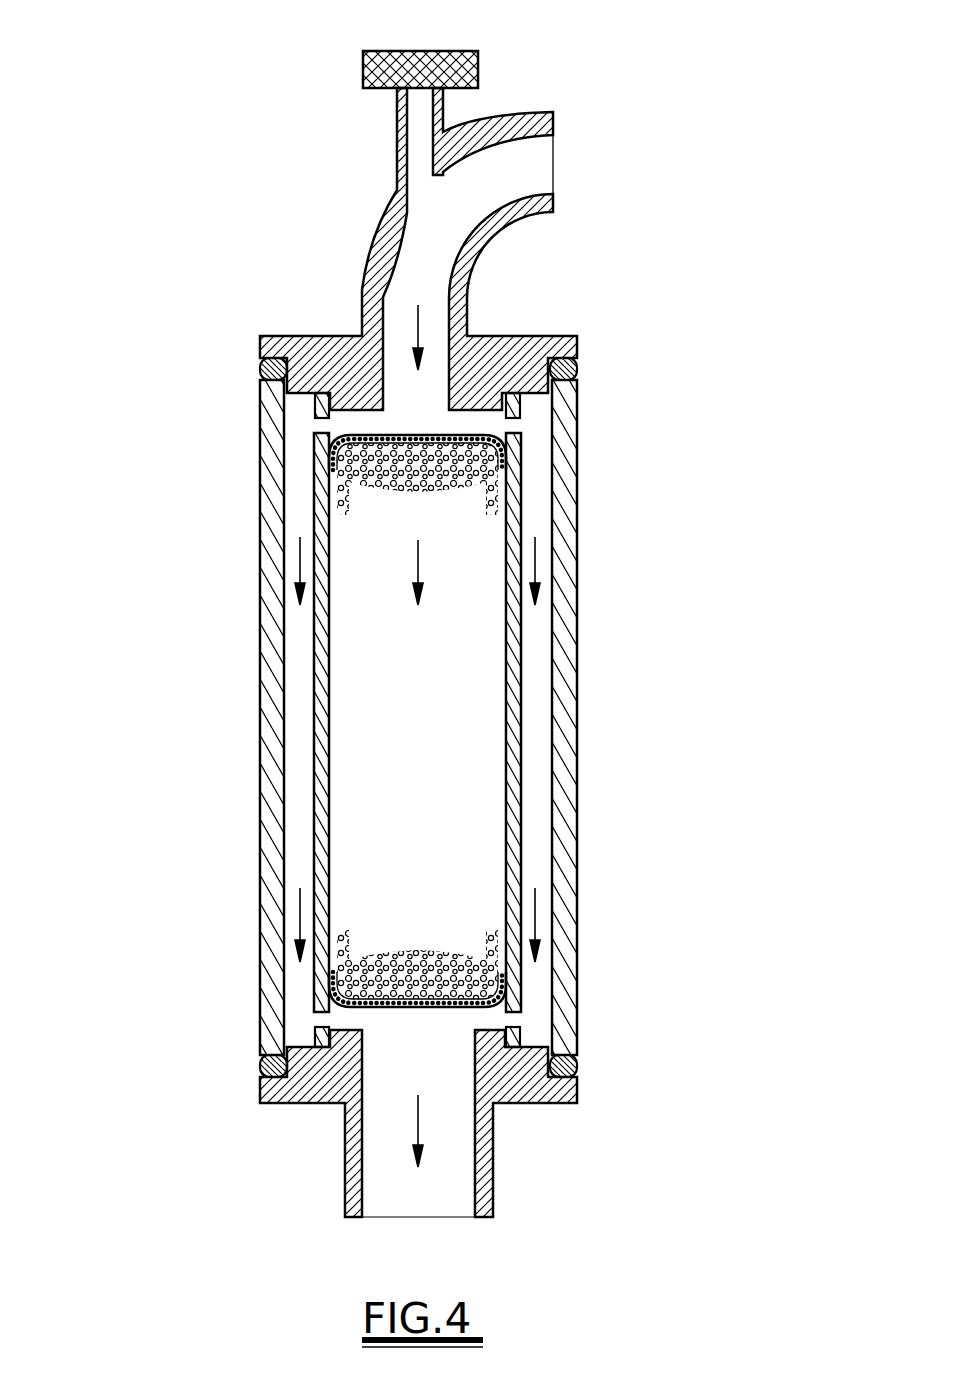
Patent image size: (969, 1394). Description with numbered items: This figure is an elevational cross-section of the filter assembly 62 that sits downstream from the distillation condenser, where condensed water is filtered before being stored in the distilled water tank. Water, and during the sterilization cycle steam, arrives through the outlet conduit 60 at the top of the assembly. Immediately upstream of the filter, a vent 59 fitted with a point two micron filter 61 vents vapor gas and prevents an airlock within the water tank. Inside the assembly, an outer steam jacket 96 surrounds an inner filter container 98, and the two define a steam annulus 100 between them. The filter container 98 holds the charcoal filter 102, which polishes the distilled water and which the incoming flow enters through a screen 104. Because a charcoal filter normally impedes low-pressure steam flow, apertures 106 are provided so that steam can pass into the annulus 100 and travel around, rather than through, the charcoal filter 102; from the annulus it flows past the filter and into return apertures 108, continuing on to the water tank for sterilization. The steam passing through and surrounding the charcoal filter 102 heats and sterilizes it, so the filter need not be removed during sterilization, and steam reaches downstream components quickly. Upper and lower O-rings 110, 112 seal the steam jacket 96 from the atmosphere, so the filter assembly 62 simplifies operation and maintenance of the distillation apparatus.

The vent 59 is at (397, 138).
The outlet conduit 60 is at (502, 220).
The 0.2 micron filter 61 is at (423, 65).
The filter assembly 62 is at (230, 753).
The steam jacket 96 is at (562, 705).
The filter container 98 is at (512, 668).
The steam annulus 100 is at (532, 838).
The charcoal filter 102 is at (330, 482).
The screen 104 is at (555, 336).
The apertures 106 is at (315, 427).
The return apertures 108 is at (318, 1024).
The upper O-ring 110 is at (517, 1103).
The lower O-ring 112 is at (265, 370).